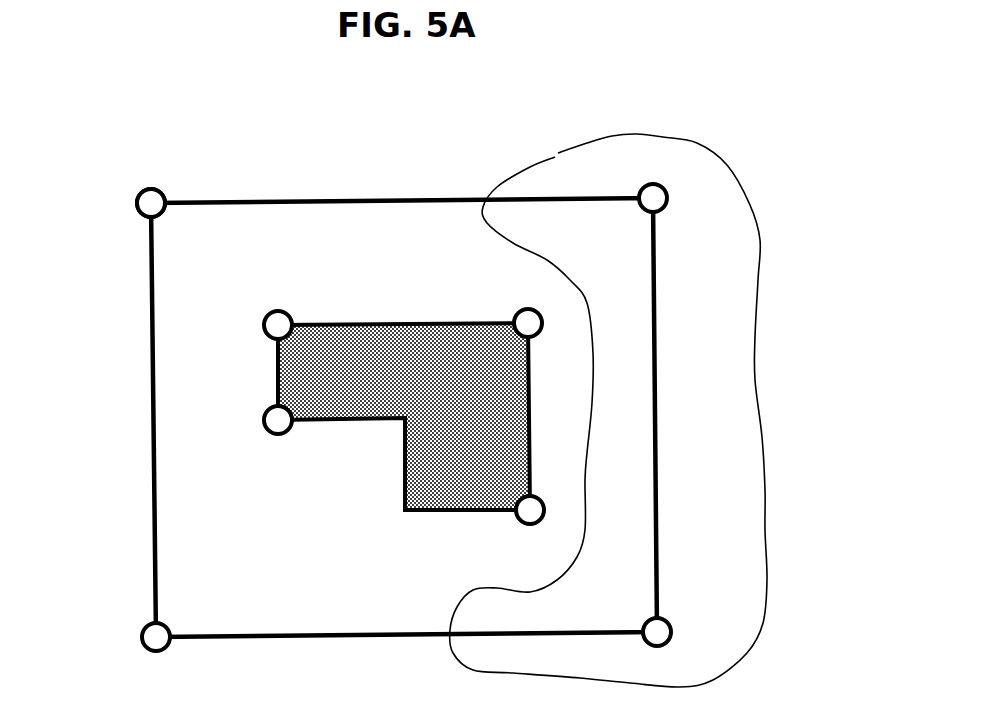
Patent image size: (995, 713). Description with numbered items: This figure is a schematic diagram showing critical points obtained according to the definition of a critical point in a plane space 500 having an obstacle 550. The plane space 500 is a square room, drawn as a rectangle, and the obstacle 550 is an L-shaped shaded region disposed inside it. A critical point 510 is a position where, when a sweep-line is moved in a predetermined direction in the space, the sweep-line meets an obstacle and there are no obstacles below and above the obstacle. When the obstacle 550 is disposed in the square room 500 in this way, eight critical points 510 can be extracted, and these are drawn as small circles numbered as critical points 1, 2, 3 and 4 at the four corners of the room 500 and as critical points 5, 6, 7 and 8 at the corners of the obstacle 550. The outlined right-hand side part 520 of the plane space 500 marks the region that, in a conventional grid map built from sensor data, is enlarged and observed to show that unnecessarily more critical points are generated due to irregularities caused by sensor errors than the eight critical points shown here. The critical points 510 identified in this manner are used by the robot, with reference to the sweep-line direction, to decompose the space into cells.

The critical point 1 is at (161, 183).
The critical point 2 is at (141, 649).
The critical point 3 is at (672, 621).
The critical point 4 is at (668, 210).
The critical point 5 is at (265, 316).
The critical point 6 is at (265, 424).
The critical point 7 is at (520, 525).
The critical point 8 is at (518, 308).
The plane space 500 is at (318, 201).
The critical point 510 is at (137, 203).
The right-hand side part 520 is at (612, 135).
The obstacle 550 is at (343, 323).